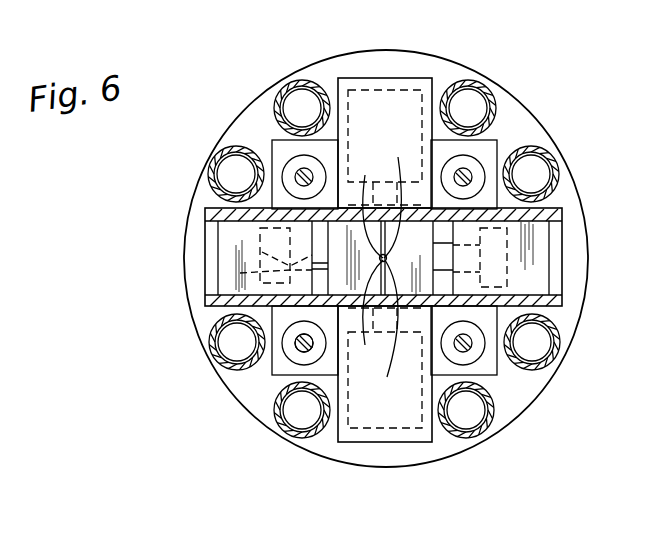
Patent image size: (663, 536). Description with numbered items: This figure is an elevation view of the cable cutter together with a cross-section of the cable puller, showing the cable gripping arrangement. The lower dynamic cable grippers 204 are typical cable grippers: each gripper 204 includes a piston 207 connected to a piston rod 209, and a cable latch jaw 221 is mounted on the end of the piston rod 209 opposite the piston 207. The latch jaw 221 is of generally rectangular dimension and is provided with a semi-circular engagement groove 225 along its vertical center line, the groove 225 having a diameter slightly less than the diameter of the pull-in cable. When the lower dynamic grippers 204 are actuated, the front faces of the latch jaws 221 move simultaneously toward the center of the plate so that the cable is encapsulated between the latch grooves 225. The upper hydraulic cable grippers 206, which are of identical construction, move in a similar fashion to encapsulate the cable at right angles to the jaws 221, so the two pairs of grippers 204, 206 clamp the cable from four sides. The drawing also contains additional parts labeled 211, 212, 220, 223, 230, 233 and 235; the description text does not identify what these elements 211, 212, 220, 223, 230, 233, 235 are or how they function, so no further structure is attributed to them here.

The lower dynamic cable gripper 204 is at (226, 232).
The upper hydraulic cable gripper 206 is at (390, 102).
The piston 207 is at (262, 252).
The piston rod 209 is at (240, 273).
The end wall 211 is at (205, 214).
The lower block 212 is at (372, 433).
The mounting plate 220 is at (272, 144).
The cable latch jaw 221 is at (296, 350).
The conductor 223 is at (371, 317).
The semi-circular engagement groove 225 is at (401, 196).
The roller bearing 230 is at (493, 412).
The terminal 233 is at (376, 332).
The terminal 235 is at (373, 206).